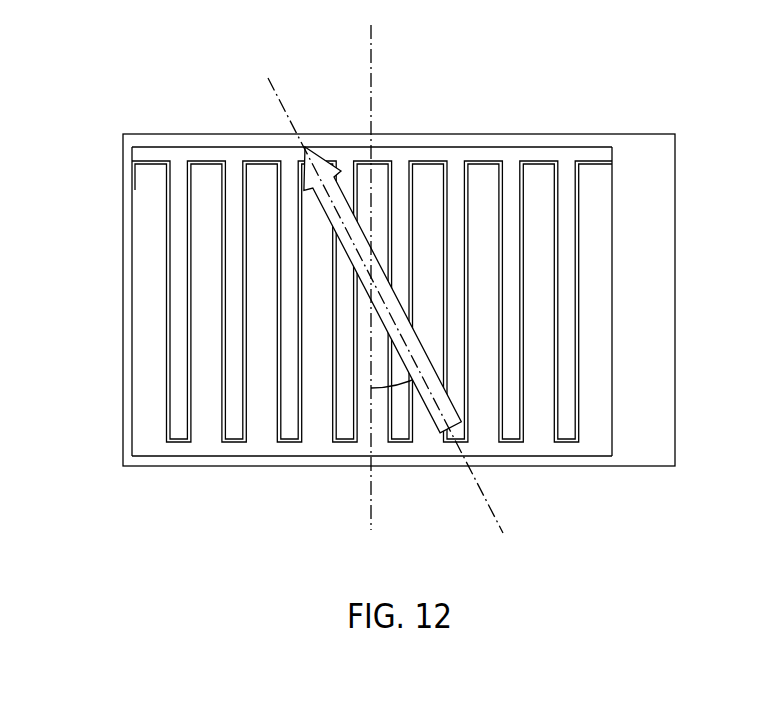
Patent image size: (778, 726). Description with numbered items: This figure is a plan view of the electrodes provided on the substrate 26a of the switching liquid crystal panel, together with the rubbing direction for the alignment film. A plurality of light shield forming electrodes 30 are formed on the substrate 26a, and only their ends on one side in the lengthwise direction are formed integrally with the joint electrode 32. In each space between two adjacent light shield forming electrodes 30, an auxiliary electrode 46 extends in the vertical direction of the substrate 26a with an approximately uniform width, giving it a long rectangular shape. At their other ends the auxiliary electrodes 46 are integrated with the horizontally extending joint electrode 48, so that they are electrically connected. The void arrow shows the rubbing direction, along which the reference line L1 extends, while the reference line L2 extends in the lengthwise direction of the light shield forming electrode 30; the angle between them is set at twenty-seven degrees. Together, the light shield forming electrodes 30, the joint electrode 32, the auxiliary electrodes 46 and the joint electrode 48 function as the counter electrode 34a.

The substrate 26a is at (638, 147).
The counter electrode 34a is at (133, 143).
The light shield forming electrode 30 is at (207, 182).
The auxiliary electrode 46 is at (180, 430).
The joint electrode 48 is at (533, 155).
The joint electrode 32 is at (565, 443).
The reference line L1 is at (490, 503).
The reference line L2 is at (373, 520).